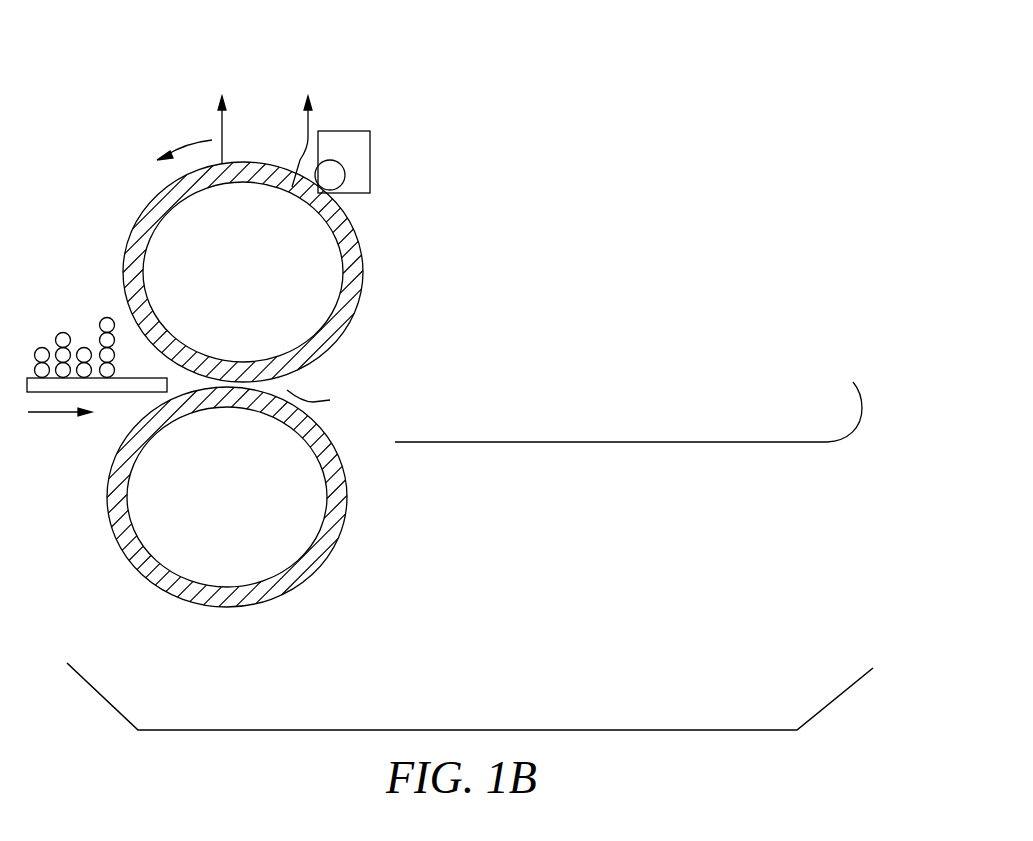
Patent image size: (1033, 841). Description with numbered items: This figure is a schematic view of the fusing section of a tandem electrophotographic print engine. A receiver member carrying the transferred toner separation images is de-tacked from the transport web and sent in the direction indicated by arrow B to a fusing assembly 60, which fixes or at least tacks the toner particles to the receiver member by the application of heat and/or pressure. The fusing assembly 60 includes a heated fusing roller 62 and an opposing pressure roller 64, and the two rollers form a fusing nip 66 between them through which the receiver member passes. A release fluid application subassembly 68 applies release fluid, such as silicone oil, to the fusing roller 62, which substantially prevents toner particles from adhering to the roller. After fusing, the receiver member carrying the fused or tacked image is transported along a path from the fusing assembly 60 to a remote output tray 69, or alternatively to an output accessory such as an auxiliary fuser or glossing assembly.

The fusing assembly 60 is at (483, 82).
The fusing roller 62 is at (157, 190).
The pressure roller 64 is at (105, 510).
The fusing nip 66 is at (330, 400).
The release fluid application subassembly 68 is at (370, 155).
The remote output tray 69 is at (600, 442).
The arrow B is at (50, 412).